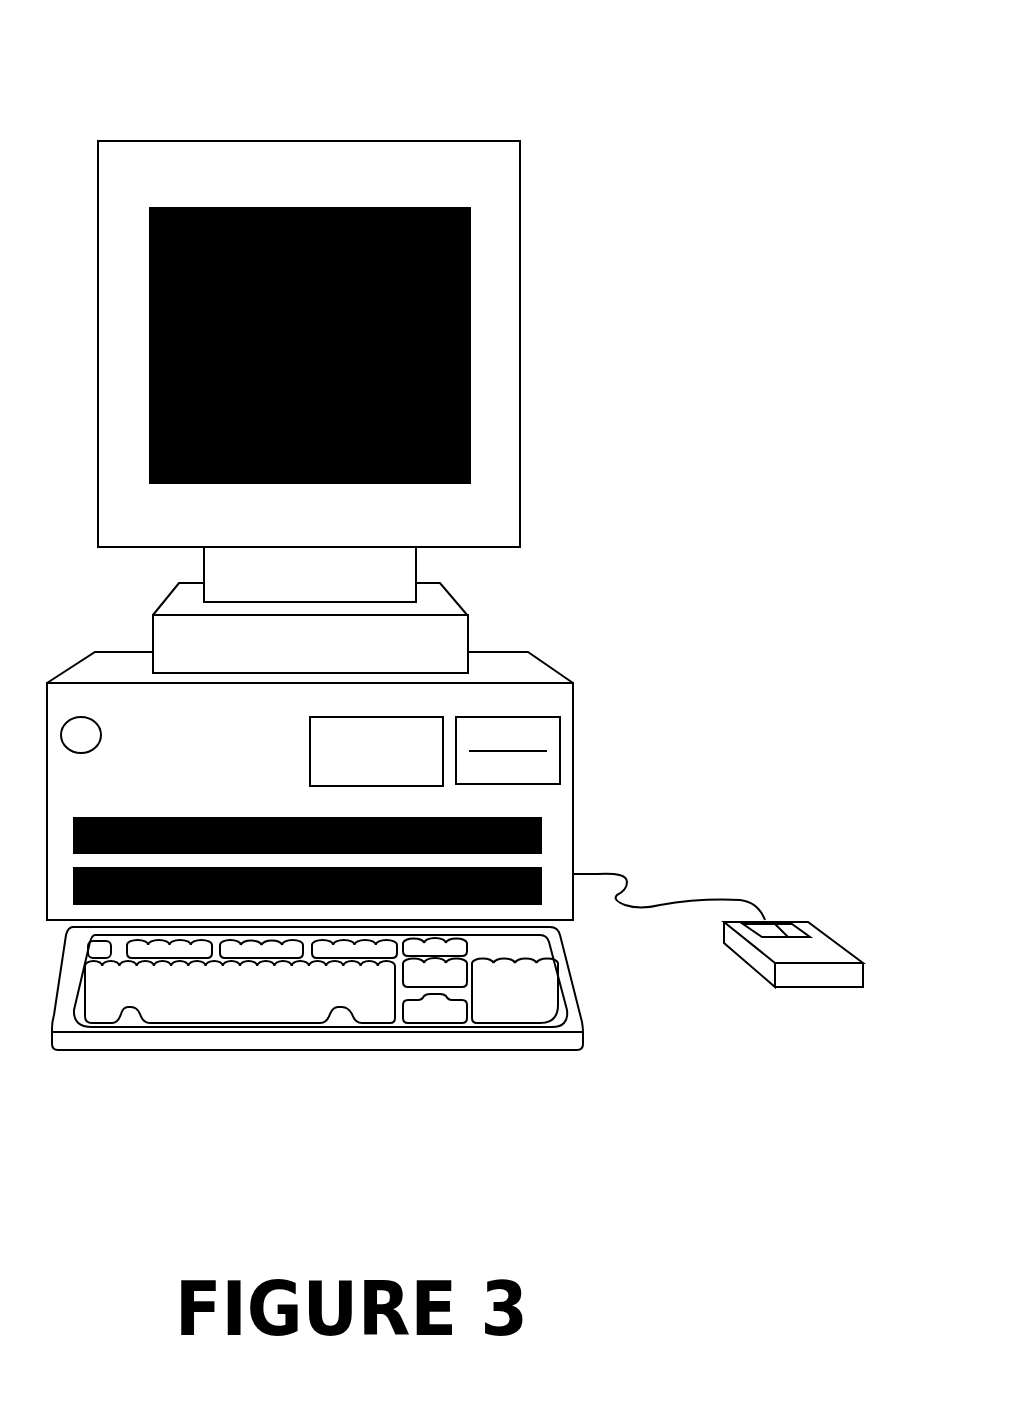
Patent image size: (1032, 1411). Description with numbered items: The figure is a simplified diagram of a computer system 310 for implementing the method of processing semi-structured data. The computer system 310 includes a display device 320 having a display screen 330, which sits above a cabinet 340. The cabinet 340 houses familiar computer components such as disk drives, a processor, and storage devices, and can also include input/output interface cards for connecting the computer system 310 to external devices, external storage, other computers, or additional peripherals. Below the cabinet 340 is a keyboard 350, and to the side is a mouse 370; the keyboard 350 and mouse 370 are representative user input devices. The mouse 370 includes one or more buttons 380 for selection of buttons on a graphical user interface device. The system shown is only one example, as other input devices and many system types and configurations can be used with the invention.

The computer system 310 is at (588, 60).
The display device 320 is at (520, 360).
The display screen 330 is at (470, 229).
The cabinet 340 is at (510, 665).
The keyboard 350 is at (433, 1050).
The mouse 370 is at (793, 978).
The buttons 380 is at (763, 928).